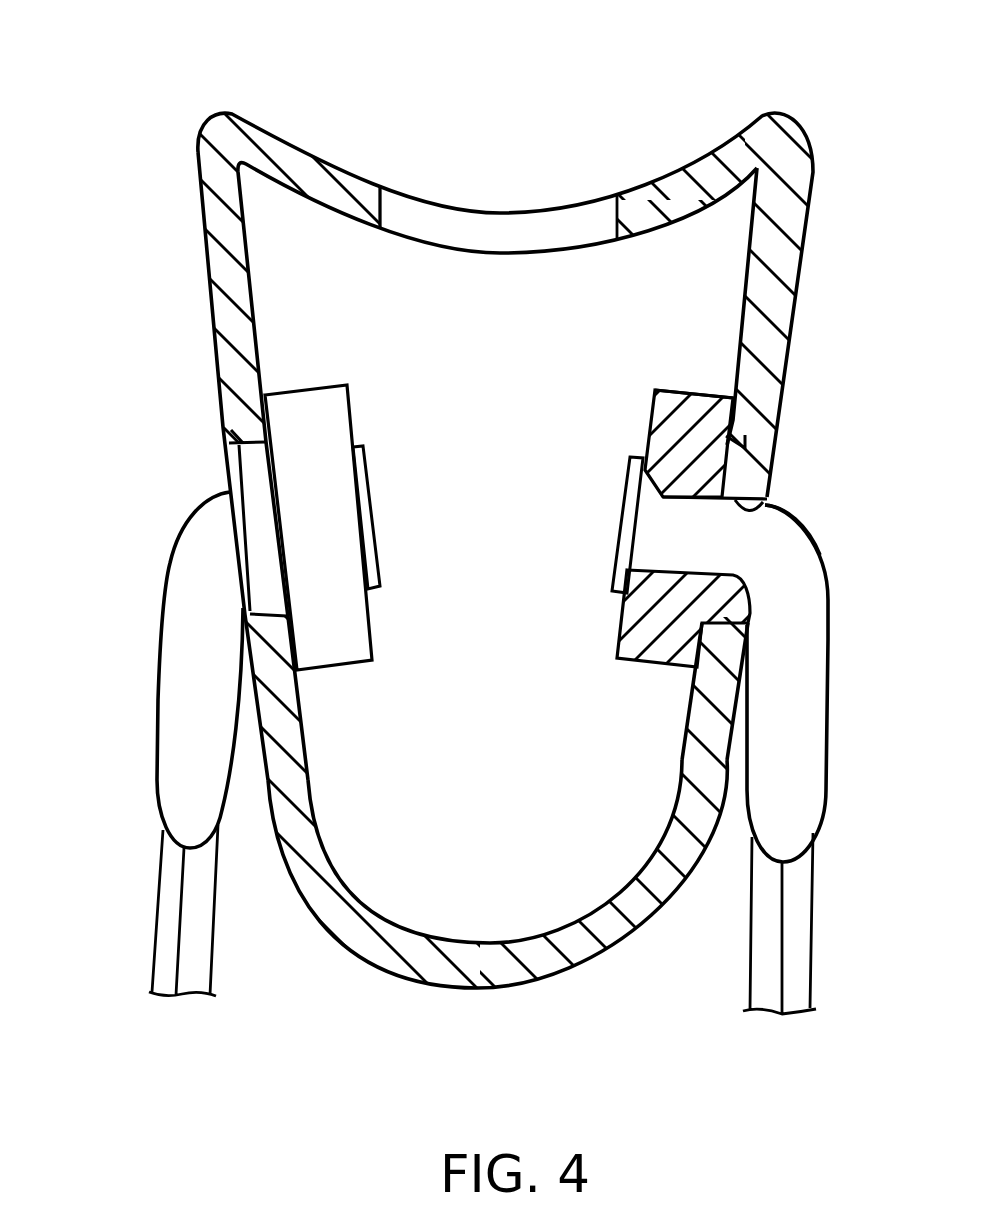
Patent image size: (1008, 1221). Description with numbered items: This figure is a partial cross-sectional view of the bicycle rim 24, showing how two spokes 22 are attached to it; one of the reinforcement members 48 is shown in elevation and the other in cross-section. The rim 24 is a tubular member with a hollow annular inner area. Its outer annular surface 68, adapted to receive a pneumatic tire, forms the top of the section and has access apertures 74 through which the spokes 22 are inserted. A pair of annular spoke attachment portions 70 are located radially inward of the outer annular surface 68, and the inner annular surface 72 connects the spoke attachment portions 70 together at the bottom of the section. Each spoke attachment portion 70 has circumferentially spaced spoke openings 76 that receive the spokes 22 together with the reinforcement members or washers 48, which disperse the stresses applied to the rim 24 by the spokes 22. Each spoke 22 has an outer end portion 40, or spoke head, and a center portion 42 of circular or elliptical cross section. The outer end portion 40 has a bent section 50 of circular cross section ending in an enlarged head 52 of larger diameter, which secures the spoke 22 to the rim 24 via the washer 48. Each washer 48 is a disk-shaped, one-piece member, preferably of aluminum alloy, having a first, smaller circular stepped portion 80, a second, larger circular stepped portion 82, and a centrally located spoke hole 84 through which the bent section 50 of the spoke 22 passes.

The spoke 22 is at (488, 737).
The rim 24 is at (721, 93).
The outer end portion 40 is at (160, 680).
The center portion 42 is at (213, 965).
The reinforcement member 48 is at (362, 377).
The bent section 50 is at (178, 537).
The enlarged head 52 is at (385, 542).
The outer annular surface 68 is at (325, 163).
The annular spoke attachment portion 70 is at (198, 212).
The inner annular surface 72 is at (483, 990).
The access aperture 74 is at (586, 200).
The spoke opening 76 is at (282, 605).
The first circular stepped portion 80 is at (222, 428).
The second circular stepped portion 82 is at (698, 388).
The spoke hole 84 is at (770, 510).